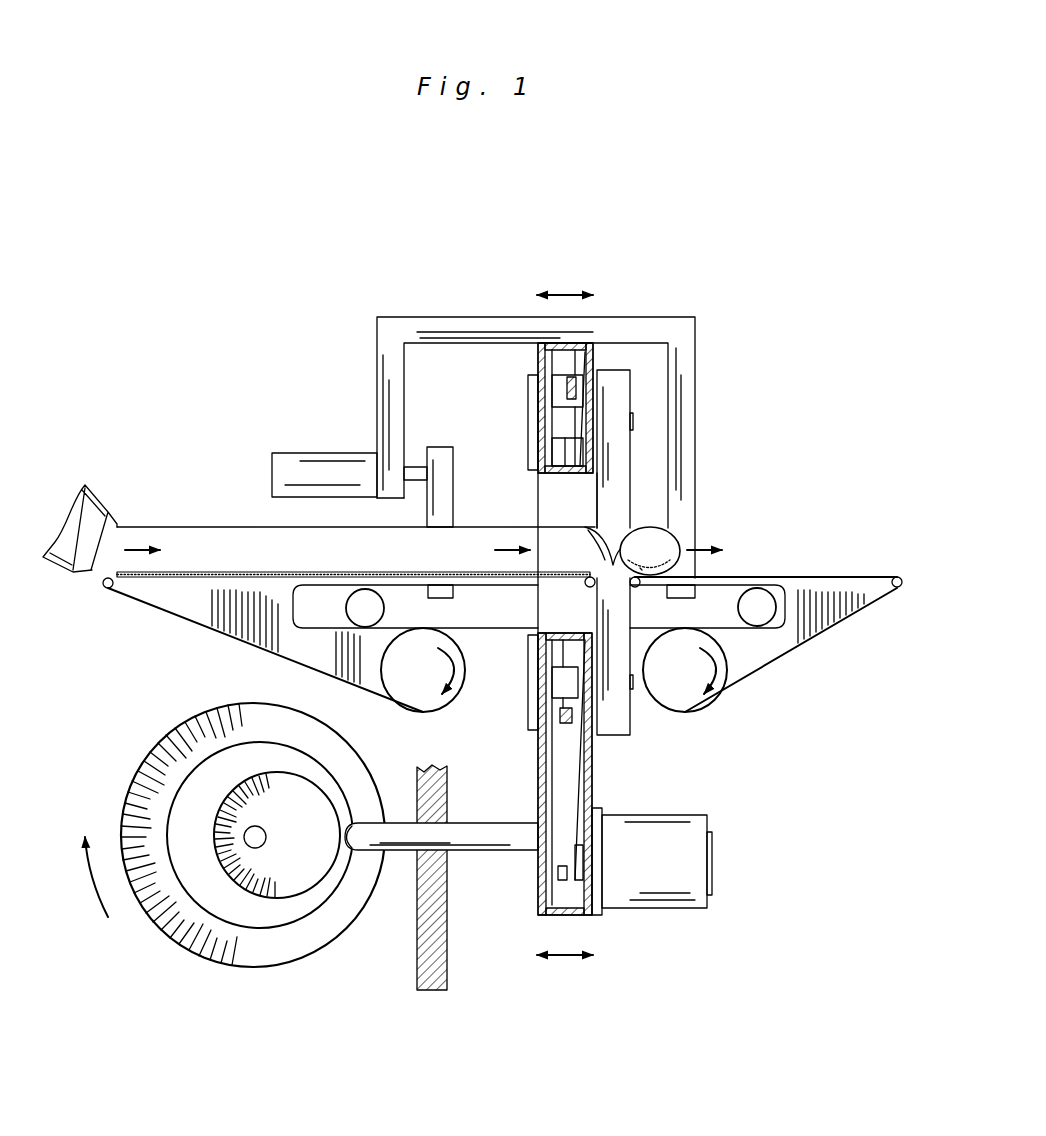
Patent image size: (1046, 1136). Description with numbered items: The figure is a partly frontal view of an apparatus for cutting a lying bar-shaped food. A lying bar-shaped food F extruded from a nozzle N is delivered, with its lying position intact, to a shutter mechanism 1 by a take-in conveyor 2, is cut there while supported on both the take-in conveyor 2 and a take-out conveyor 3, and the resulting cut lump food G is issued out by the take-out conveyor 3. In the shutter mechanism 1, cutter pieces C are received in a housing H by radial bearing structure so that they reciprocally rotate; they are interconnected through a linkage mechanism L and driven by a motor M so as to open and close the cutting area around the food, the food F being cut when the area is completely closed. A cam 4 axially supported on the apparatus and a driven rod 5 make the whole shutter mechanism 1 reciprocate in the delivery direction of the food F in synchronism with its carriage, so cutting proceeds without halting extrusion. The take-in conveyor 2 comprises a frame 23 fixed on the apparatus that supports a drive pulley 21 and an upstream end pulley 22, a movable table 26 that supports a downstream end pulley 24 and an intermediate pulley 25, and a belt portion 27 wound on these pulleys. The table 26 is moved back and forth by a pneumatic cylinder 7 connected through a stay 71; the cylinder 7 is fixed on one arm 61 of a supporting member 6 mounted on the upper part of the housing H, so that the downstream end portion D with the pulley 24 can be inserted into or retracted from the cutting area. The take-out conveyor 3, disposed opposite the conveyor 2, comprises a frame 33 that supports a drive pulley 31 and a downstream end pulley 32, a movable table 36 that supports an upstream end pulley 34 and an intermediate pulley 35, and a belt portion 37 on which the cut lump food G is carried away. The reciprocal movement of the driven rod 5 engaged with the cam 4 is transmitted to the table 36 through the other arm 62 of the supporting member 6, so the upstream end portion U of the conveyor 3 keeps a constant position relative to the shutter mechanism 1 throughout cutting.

The shutter mechanism 1 is at (535, 364).
The take-in conveyor 2 is at (237, 570).
The take-out conveyor 3 is at (779, 571).
The cam 4 is at (255, 953).
The driven rod 5 is at (495, 851).
The supporting member 6 is at (448, 332).
The pneumatic cylinder 7 is at (307, 470).
The drive pulley 21 is at (425, 695).
The upstream end pulley 22 is at (105, 588).
The frame 23 is at (275, 635).
The downstream end pulley 24 is at (588, 590).
The intermediate pulley 25 is at (375, 608).
The movable table 26 is at (463, 588).
The belt portion 27 is at (172, 616).
The drive pulley 31 is at (690, 690).
The downstream end pulley 32 is at (900, 588).
The frame 33 is at (848, 608).
The upstream end pulley 34 is at (637, 590).
The intermediate pulley 35 is at (760, 620).
The movable table 36 is at (717, 588).
The belt portion 37 is at (865, 573).
The arm 61 is at (383, 402).
The arm 62 is at (683, 437).
The stay 71 is at (437, 458).
The nozzle N is at (92, 510).
The lying bar-shaped food F is at (172, 545).
The downstream end portion D is at (586, 570).
The cut lump food G is at (647, 543).
The upstream end portion U is at (642, 567).
The cutter pieces C is at (617, 390).
The linkage mechanism L is at (567, 740).
The housing H is at (538, 787).
The motor M is at (657, 900).